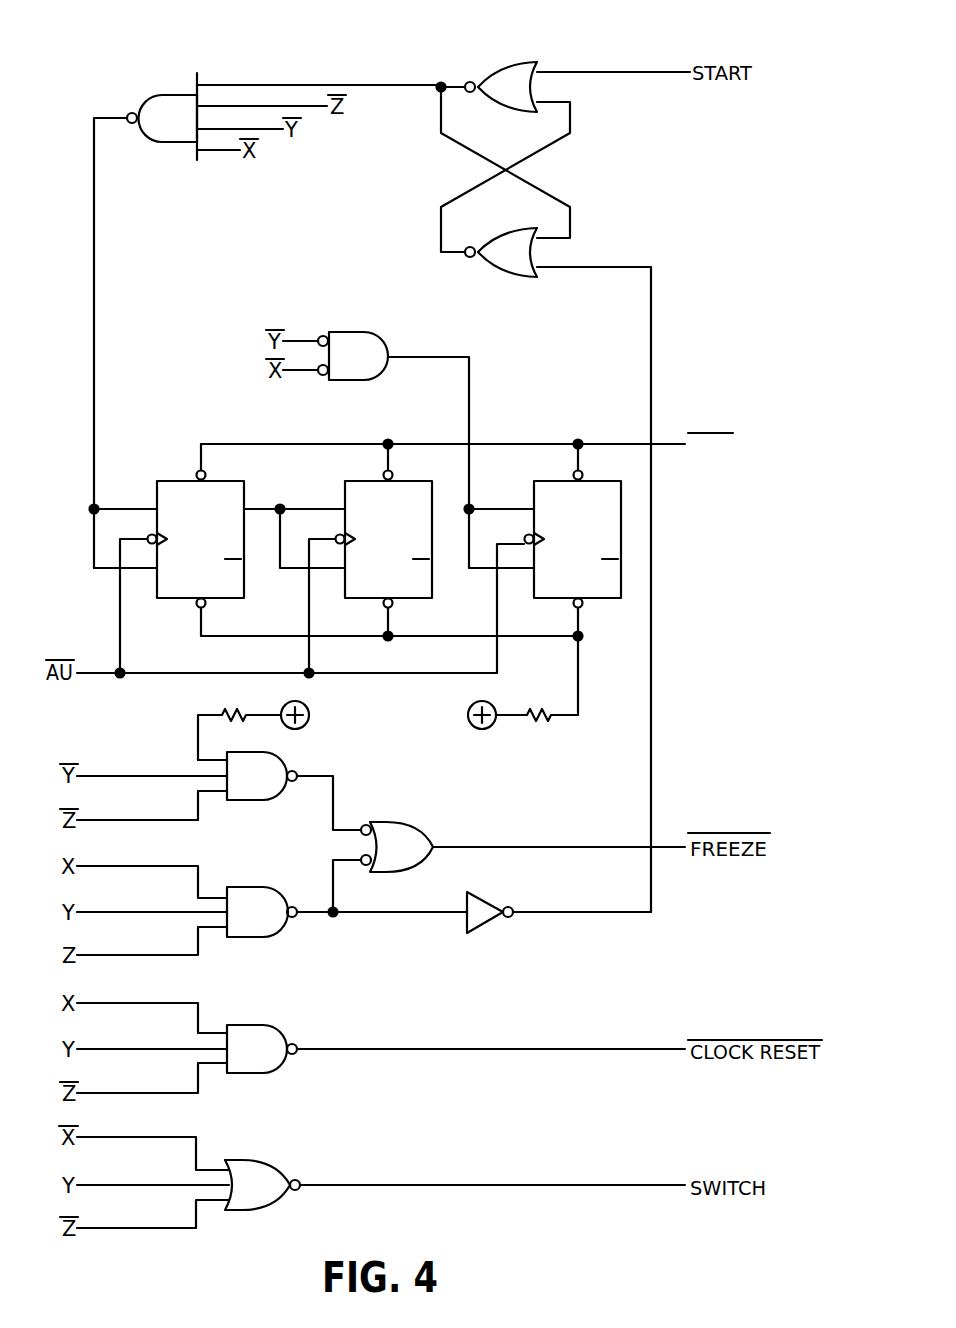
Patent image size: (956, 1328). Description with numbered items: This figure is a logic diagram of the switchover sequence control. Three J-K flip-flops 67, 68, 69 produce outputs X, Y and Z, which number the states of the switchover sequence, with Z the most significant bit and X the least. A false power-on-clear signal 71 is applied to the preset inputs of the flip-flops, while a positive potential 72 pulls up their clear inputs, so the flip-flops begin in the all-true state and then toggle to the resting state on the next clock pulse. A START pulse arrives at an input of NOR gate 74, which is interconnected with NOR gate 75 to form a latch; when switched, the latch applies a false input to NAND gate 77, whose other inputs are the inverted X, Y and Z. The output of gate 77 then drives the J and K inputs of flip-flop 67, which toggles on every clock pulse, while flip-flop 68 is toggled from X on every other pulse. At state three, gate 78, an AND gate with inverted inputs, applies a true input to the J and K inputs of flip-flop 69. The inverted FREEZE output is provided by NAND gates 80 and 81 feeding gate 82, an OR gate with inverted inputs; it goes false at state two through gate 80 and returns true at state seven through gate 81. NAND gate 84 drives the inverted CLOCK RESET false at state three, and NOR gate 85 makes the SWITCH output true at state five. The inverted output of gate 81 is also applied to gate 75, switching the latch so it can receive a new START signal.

The flip-flop 67 is at (157, 485).
The flip-flop 68 is at (345, 485).
The flip-flop 69 is at (534, 485).
The power-on-clear signal 71 is at (510, 444).
The positive potential 72 is at (481, 729).
The NOR gate 74 is at (507, 62).
The NOR gate 75 is at (503, 231).
The NAND gate 77 is at (168, 95).
The AND gate with inverted inputs 78 is at (354, 332).
The NAND gate 80 is at (288, 754).
The NAND gate 81 is at (264, 887).
The OR gate with inverted inputs 82 is at (395, 822).
The NAND gate 84 is at (268, 1025).
The NOR gate 85 is at (268, 1160).